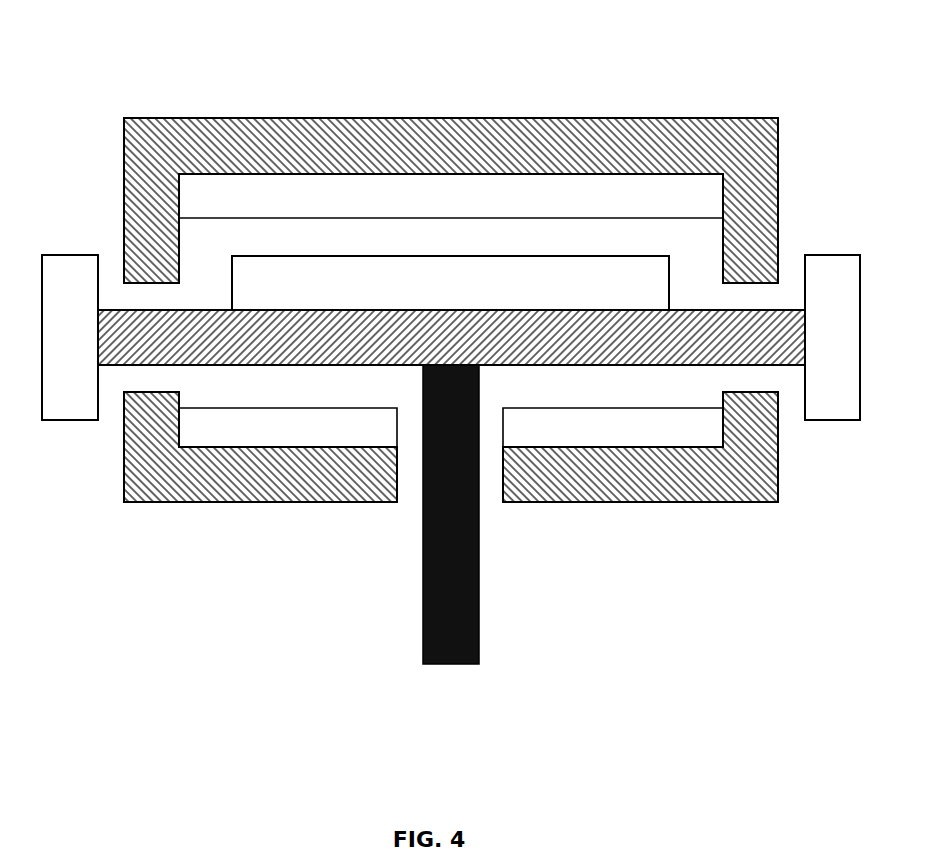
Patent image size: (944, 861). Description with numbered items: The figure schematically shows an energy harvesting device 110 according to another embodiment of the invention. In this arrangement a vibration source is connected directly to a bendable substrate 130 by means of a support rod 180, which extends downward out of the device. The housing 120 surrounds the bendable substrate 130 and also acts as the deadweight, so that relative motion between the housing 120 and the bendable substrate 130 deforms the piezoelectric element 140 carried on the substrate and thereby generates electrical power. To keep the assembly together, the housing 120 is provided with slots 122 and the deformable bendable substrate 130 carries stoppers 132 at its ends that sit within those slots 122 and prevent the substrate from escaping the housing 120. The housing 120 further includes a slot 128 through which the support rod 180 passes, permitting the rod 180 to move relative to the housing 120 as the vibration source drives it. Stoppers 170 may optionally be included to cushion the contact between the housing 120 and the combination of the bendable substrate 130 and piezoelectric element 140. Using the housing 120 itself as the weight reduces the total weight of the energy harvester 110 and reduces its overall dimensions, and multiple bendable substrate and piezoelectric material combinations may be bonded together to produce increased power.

The energy harvesting device 110 is at (55, 30).
The housing 120 is at (172, 133).
The slots 122 is at (117, 409).
The slot 128 is at (409, 491).
The bendable substrate 130 is at (307, 332).
The stoppers 132 is at (451, 337).
The piezoelectric element 140 is at (277, 273).
The stoppers 170 is at (262, 190).
The support rod 180 is at (452, 662).